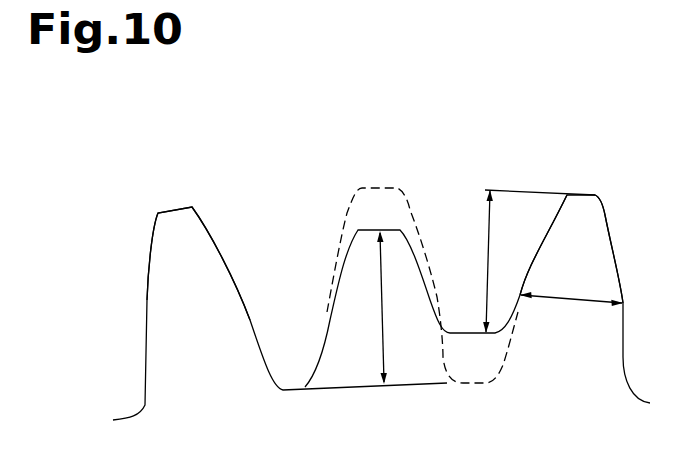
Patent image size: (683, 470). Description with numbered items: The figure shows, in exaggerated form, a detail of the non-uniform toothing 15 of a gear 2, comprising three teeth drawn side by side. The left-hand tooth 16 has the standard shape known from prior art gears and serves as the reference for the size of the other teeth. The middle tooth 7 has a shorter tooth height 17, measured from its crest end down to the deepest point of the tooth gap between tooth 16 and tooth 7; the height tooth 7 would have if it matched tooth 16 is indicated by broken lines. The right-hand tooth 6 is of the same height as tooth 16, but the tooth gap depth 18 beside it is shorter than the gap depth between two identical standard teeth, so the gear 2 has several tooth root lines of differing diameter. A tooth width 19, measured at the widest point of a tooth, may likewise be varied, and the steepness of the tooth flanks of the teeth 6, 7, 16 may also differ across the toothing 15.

The gear 2 is at (325, 165).
The tooth 6 is at (578, 220).
The tooth 7 is at (420, 250).
The toothing 15 is at (517, 169).
The tooth 16 is at (197, 232).
The tooth height 17 is at (375, 322).
The tooth gap depth 18 is at (480, 237).
The tooth width 19 is at (567, 308).